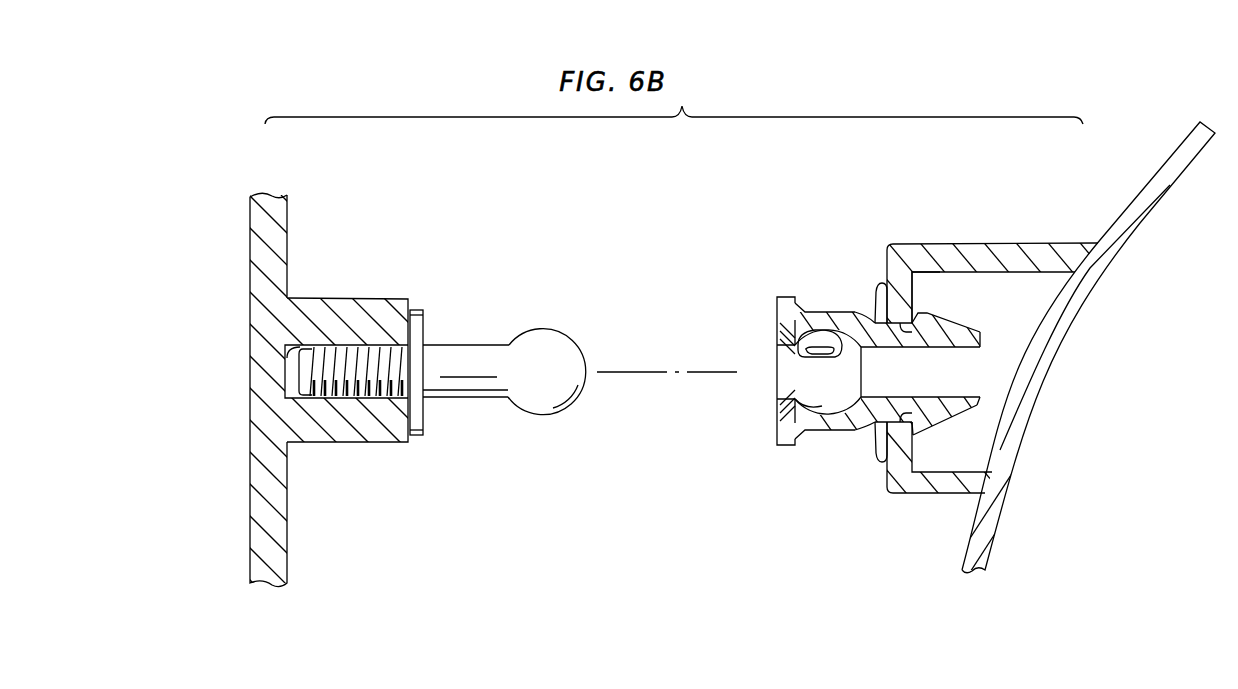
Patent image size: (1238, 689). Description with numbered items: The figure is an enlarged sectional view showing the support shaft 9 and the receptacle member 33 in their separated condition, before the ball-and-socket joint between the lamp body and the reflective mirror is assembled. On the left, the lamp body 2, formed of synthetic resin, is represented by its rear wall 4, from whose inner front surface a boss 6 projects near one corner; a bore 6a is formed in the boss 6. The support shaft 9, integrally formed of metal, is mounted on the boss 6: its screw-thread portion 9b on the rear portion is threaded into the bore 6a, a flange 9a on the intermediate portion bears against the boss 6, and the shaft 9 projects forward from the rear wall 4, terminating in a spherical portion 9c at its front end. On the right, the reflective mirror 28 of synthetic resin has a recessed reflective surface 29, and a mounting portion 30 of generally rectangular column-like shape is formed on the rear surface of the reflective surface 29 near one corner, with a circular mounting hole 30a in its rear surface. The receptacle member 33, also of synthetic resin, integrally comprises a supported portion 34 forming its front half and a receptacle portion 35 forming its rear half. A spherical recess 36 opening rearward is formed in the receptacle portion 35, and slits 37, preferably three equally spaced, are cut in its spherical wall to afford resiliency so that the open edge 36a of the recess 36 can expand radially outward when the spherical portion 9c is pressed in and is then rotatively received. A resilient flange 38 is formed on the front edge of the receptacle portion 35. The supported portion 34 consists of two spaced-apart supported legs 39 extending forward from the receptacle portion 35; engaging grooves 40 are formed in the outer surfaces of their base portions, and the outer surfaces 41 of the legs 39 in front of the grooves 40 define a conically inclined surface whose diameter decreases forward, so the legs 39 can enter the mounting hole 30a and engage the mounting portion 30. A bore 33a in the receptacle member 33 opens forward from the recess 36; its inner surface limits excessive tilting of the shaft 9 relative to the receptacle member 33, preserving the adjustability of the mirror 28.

The lamp body 2 is at (250, 214).
The rear wall 4 is at (288, 242).
The boss 6 is at (376, 299).
The bore 6a is at (285, 346).
The support shaft 9 is at (458, 345).
The flange 9a is at (414, 310).
The screw-thread portion 9b is at (345, 350).
The spherical portion 9c is at (545, 340).
The reflective mirror 28 is at (1166, 182).
The reflective surface 29 is at (1141, 226).
The mounting portion 30 is at (975, 262).
The mounting hole 30a is at (896, 274).
The receptacle member 33 is at (832, 447).
The bore 33a is at (950, 410).
The supported portion 34 is at (945, 318).
The receptacle portion 35 is at (790, 447).
The spherical recess 36 is at (822, 334).
The open edge 36a is at (789, 335).
The slits 37 is at (796, 357).
The resilient flange 38 is at (870, 305).
The supported legs 39 is at (972, 330).
The engaging grooves 40 is at (880, 284).
The outer surfaces 41 is at (925, 312).